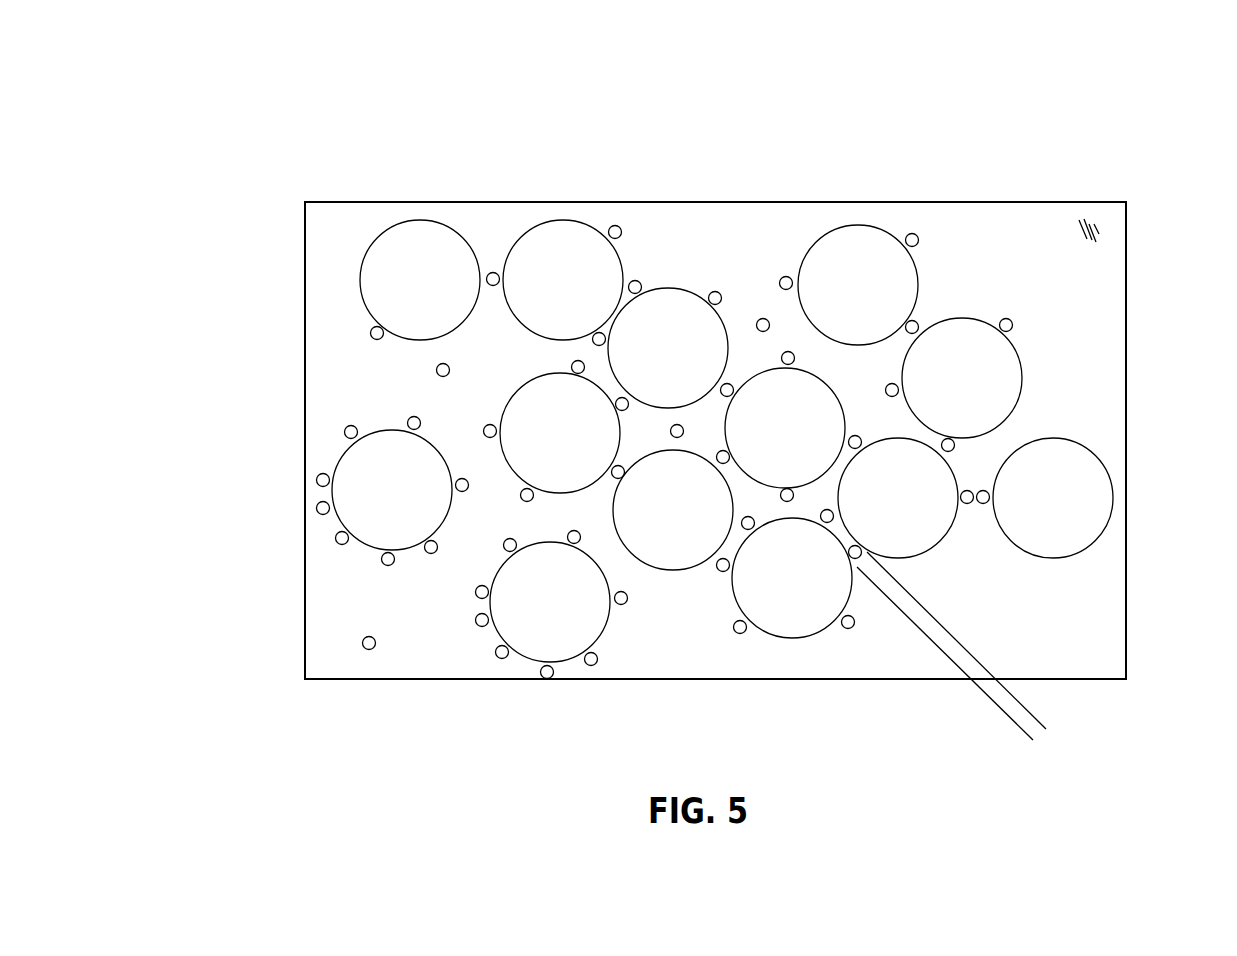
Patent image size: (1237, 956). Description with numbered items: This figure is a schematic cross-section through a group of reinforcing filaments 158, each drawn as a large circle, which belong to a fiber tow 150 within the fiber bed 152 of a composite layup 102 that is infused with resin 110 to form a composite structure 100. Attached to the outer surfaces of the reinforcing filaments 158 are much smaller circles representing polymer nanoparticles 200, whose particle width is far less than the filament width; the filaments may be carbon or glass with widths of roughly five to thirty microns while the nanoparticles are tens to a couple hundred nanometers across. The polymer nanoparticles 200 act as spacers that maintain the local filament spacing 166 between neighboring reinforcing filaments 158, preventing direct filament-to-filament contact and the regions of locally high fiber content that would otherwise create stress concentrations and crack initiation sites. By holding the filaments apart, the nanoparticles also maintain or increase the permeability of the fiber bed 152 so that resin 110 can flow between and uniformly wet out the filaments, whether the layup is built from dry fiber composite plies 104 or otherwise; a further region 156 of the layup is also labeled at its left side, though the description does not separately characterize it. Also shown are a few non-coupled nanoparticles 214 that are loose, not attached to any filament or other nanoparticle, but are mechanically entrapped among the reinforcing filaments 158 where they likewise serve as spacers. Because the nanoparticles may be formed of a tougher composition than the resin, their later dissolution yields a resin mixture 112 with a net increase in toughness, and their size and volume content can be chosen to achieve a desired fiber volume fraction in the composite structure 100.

The composite structure 100 is at (272, 115).
The composite layup 102 is at (360, 202).
The dry fiber composite plies 104 is at (303, 293).
The resin 110 is at (1097, 232).
The resin mixture 112 is at (1133, 270).
The fiber tow 150 is at (494, 202).
The fiber bed 152 is at (305, 202).
The left side surface 156 is at (305, 343).
The reinforcing filaments 158 is at (462, 235).
The filament spacing 166 is at (973, 765).
The polymer nanoparticles 200 is at (635, 287).
The non-coupled nanoparticles 214 is at (437, 370).